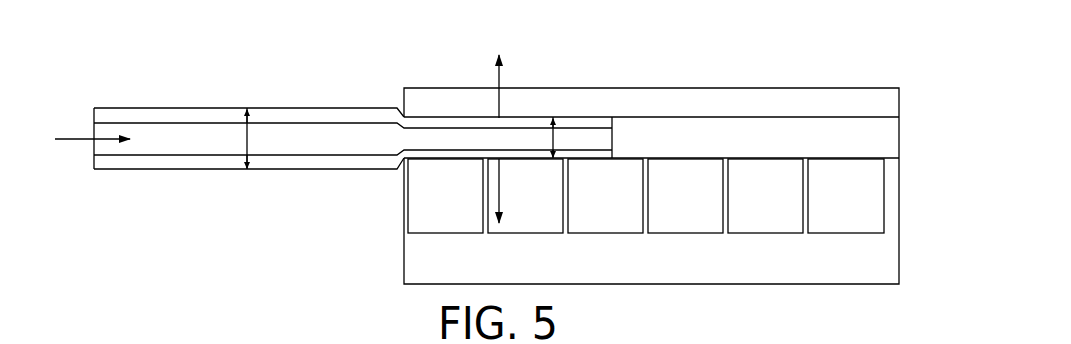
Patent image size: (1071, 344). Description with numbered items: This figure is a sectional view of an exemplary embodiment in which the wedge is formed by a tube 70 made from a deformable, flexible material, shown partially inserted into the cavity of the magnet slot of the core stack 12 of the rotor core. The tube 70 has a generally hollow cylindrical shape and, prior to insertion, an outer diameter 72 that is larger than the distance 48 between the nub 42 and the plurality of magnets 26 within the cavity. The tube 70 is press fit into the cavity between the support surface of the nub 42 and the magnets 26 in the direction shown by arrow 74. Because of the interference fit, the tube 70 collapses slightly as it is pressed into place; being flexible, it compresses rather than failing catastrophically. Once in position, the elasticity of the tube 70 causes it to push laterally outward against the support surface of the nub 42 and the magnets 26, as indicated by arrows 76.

The core stack 12 is at (899, 253).
The plurality of magnets 26 is at (856, 207).
The nub 42 is at (680, 103).
The distance 48 is at (553, 140).
The tube 70 is at (162, 108).
The outer diameter 72 is at (247, 139).
The arrow 74 is at (80, 140).
The arrows 76 is at (497, 100).